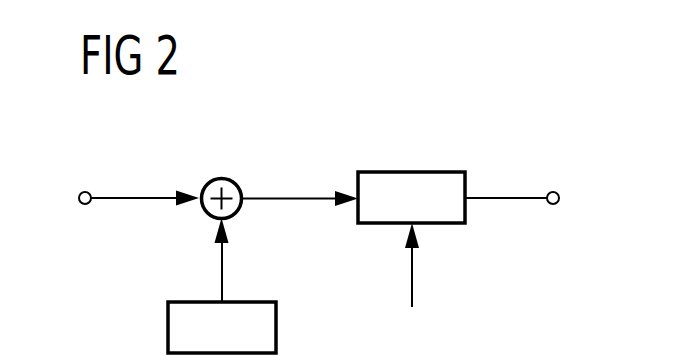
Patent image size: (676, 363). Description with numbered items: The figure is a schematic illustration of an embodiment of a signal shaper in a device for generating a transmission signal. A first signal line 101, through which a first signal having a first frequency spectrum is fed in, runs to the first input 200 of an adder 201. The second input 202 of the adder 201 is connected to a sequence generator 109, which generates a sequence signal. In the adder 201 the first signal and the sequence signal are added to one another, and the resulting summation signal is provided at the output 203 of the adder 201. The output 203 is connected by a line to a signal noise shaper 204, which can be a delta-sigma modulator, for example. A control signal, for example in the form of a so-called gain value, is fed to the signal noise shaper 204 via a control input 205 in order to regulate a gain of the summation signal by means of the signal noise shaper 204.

The first signal line 101 is at (140, 197).
The sequence generator 109 is at (276, 328).
The first input 200 is at (204, 208).
The adder 201 is at (222, 178).
The second input 202 is at (230, 216).
The output 203 is at (243, 193).
The signal noise shaper 204 is at (412, 172).
The control input 205 is at (412, 275).